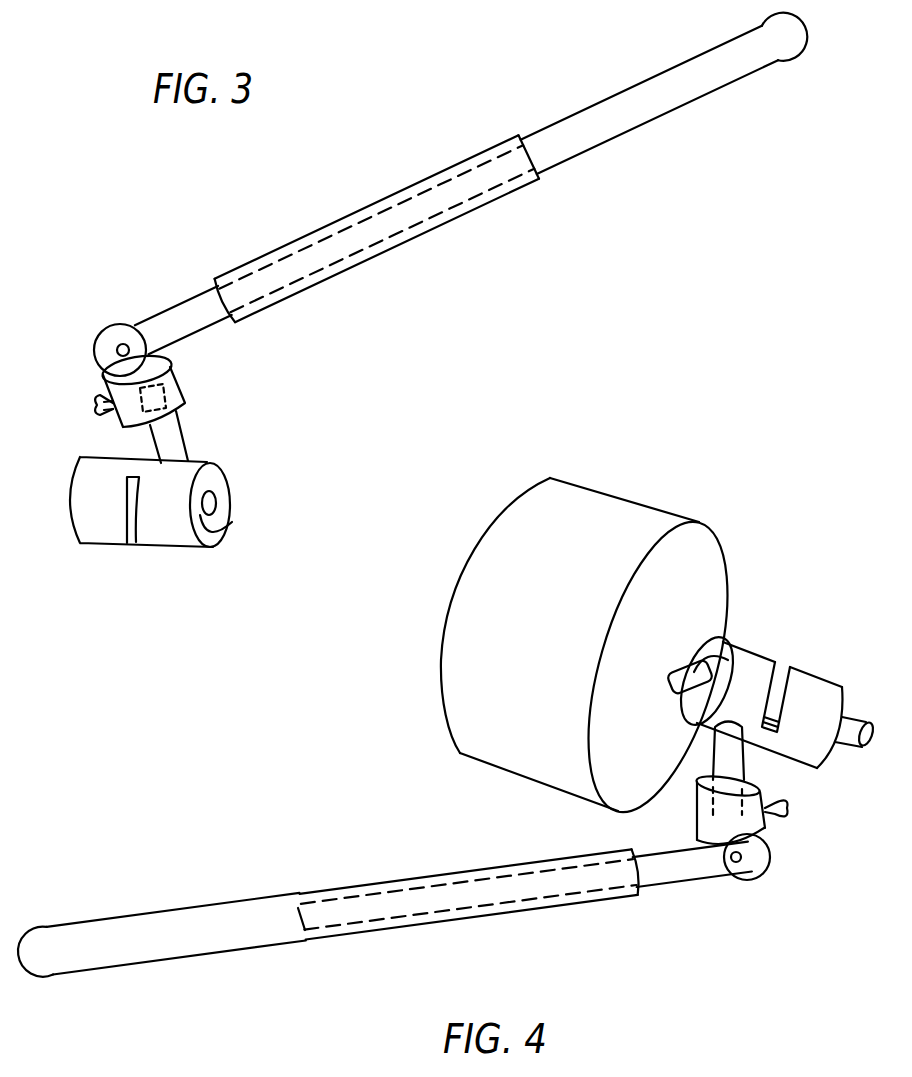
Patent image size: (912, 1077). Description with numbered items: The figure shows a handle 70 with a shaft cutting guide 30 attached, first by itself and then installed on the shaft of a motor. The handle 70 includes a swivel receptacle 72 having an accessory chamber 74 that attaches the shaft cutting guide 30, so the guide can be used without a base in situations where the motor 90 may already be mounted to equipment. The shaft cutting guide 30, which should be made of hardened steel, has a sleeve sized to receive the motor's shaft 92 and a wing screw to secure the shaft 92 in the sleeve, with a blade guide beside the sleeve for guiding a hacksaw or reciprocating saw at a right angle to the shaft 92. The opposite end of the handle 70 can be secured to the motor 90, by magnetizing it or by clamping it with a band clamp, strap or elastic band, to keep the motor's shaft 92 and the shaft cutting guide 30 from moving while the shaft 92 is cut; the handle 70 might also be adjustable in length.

In FIG. 3, the shaft cutting guide 30 is at (183, 562).
In FIG. 4, the shaft cutting guide 30 is at (765, 638).
In FIG. 3, the handle 70 is at (576, 186).
In FIG. 4, the handle 70 is at (198, 880).
In FIG. 3, the swivel receptacle 72 is at (182, 388).
In FIG. 4, the swivel receptacle 72 is at (697, 820).
In FIG. 3, the accessory chamber 74 is at (160, 407).
In FIG. 4, the accessory chamber 74 is at (730, 800).
In FIG. 4, the motor 90 is at (623, 486).
In FIG. 4, the motor's shaft 92 is at (848, 738).